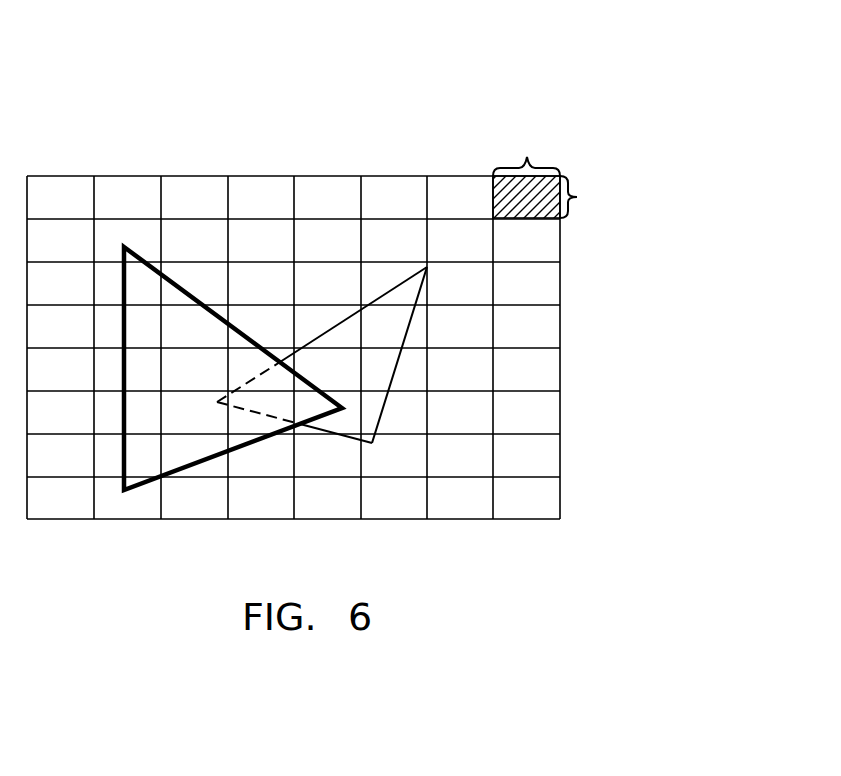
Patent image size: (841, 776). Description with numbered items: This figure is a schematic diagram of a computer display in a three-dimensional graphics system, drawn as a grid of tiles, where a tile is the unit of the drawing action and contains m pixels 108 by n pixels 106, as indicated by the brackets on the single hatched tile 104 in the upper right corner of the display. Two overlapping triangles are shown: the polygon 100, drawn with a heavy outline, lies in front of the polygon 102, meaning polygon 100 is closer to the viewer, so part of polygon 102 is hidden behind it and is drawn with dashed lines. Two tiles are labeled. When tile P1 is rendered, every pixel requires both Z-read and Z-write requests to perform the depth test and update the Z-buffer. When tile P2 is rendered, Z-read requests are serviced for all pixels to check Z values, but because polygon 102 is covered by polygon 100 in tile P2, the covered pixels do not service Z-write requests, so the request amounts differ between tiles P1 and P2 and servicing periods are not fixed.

The polygon 100 is at (124, 247).
The polygon 102 is at (432, 338).
The pixel 104 is at (550, 181).
The pixels 106 is at (589, 197).
The pixels 108 is at (526, 153).
The tile P1 is at (185, 375).
The tile P2 is at (414, 380).